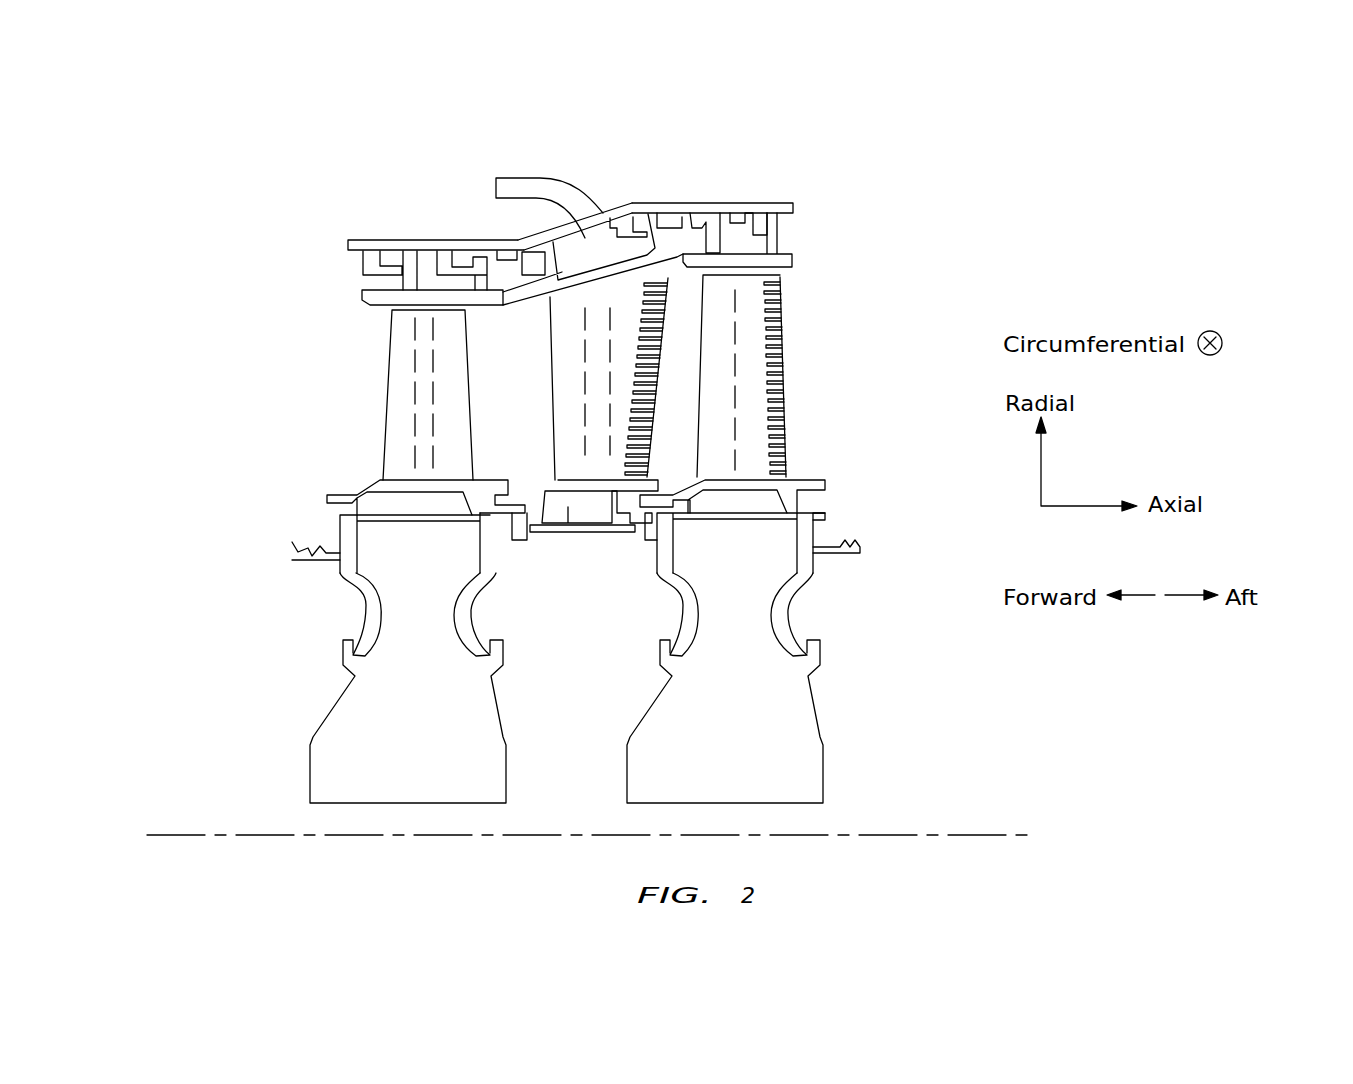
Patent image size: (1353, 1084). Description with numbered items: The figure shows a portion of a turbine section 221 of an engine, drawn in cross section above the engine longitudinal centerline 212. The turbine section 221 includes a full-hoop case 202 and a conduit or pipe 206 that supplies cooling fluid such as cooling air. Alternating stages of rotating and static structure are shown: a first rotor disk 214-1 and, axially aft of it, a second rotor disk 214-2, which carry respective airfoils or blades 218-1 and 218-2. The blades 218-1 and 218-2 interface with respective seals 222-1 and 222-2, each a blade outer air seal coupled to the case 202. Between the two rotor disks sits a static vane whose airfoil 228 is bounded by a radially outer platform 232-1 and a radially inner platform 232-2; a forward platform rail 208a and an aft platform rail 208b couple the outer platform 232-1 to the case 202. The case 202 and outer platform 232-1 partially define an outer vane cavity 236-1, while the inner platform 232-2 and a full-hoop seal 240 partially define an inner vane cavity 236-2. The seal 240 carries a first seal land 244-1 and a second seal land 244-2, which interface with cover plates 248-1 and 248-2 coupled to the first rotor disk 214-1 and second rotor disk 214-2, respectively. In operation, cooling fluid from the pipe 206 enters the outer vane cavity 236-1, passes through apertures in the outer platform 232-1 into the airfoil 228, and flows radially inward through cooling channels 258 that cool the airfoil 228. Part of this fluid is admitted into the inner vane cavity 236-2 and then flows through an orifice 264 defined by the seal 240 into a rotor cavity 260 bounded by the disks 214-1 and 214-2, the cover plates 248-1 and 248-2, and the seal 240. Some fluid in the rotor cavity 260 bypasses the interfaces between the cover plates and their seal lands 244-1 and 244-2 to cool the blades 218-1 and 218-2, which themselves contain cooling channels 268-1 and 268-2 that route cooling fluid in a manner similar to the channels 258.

The case 202 is at (774, 203).
The conduit/pipe 206 is at (528, 177).
The forward platform rail 208a is at (530, 257).
The aft platform rail 208b is at (688, 225).
The engine longitudinal centerline 212 is at (1022, 833).
The first rotor disk 214-1 is at (327, 782).
The second rotor disk 214-2 is at (803, 773).
The first airfoil/blade 218-1 is at (385, 470).
The second airfoil/blade 218-2 is at (793, 480).
The turbine section 221 is at (978, 165).
The first seal 222-1 is at (372, 298).
The second seal 222-2 is at (775, 238).
The airfoil 228 is at (563, 372).
The outer platform 232-1 is at (598, 272).
The inner platform 232-2 is at (540, 477).
The outer vane cavity 236-1 is at (560, 222).
The inner vane cavity 236-2 is at (568, 527).
The seal 240 is at (500, 518).
The first seal land 244-1 is at (497, 527).
The second seal land 244-2 is at (623, 548).
The first cover plate 248-1 is at (460, 607).
The second cover plate 248-2 is at (682, 598).
The cooling channels 258 is at (587, 413).
The rotor cavity 260 is at (590, 686).
The orifice 264 is at (583, 525).
The cooling channels 268-1 is at (433, 365).
The cooling channels 268-2 is at (733, 395).